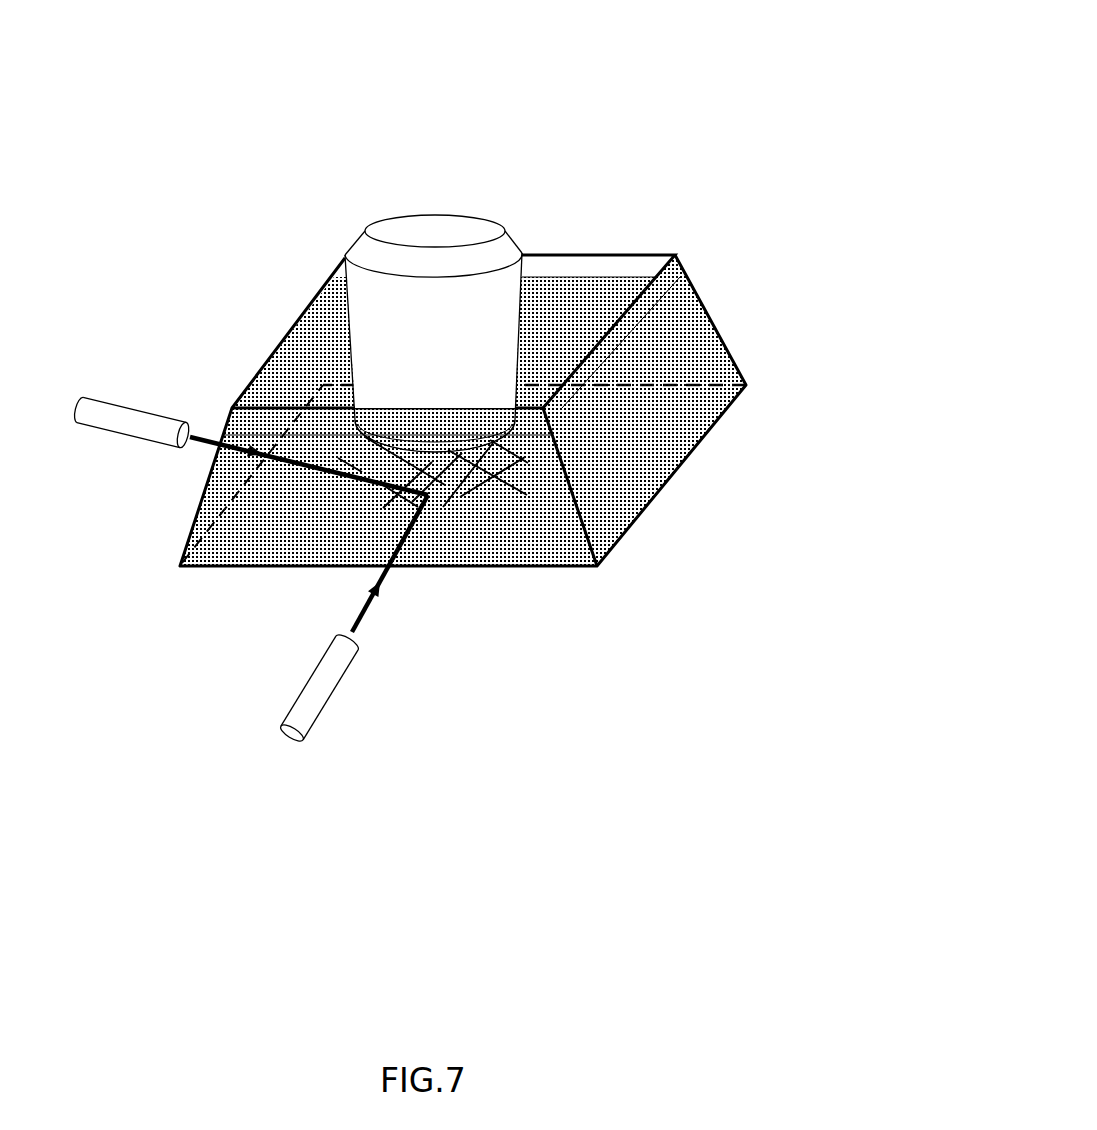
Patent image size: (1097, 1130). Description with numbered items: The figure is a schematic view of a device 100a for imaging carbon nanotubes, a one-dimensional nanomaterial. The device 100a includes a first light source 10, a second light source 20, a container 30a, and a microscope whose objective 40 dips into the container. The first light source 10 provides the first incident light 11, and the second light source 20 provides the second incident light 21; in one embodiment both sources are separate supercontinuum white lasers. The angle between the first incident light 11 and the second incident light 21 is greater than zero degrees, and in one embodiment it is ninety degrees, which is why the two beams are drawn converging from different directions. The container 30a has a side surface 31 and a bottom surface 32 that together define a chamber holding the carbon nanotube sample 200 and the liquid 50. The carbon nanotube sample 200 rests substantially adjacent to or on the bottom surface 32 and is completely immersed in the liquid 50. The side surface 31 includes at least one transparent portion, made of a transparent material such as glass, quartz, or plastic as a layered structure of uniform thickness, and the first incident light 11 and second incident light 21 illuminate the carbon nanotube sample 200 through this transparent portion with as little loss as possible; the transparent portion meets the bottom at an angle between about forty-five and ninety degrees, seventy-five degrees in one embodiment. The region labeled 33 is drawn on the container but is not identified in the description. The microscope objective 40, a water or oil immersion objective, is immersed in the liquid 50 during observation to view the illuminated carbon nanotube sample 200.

The device for imaging carbon nanotubes 100a is at (630, 92).
The first light source 10 is at (118, 423).
The first incident light 11 is at (300, 455).
The second light source 20 is at (312, 695).
The second incident light 21 is at (388, 573).
The container 30a is at (525, 362).
The side surface 31 is at (620, 485).
The bottom surface 32 is at (598, 268).
The top surface region 33 is at (537, 330).
The microscope objective 40 is at (397, 310).
The liquid 50 is at (468, 483).
The carbon nanotube sample 200 is at (455, 507).